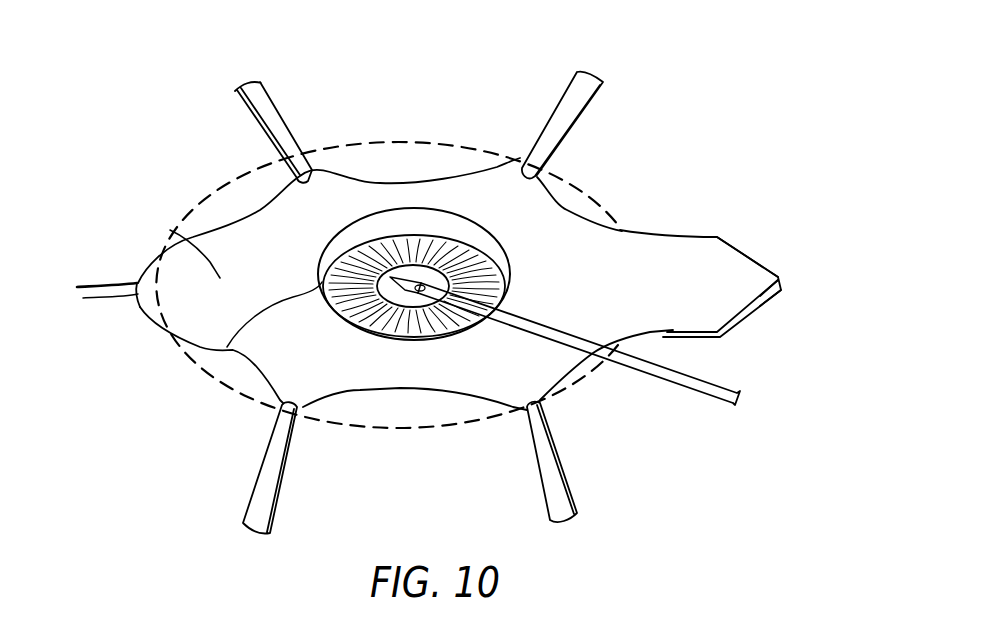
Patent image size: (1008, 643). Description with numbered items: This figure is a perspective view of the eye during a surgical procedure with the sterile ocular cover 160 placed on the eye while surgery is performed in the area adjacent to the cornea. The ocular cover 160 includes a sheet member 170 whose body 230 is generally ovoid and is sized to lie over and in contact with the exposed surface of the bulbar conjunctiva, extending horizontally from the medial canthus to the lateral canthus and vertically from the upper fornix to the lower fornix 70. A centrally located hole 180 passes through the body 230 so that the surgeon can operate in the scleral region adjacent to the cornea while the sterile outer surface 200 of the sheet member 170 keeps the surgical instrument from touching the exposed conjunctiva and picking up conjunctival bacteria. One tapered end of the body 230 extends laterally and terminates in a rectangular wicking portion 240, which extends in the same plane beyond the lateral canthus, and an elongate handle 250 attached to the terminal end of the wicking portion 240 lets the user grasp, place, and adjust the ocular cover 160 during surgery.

The lower fornix 70 is at (408, 148).
The sterile ocular cover 160 is at (240, 207).
The sheet member 170 is at (560, 230).
The hole 180 is at (243, 330).
The outer surface 200 is at (170, 230).
The body 230 is at (418, 373).
The wicking portion 240 is at (667, 293).
The handle 250 is at (768, 288).